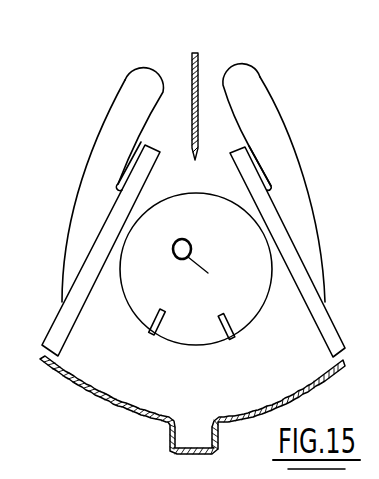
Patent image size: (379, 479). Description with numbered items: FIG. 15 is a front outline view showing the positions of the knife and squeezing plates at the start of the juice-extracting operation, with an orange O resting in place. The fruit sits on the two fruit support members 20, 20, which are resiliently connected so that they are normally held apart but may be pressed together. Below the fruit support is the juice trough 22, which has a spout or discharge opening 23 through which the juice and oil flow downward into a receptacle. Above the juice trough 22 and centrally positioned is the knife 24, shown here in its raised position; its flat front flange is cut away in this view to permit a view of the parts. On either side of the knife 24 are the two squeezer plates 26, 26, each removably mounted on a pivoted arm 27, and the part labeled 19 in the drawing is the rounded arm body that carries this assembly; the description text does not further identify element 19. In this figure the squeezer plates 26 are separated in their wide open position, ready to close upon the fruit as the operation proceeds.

The pivoted clamping arm 19 is at (253, 92).
The fruit support member 20 is at (154, 340).
The juice trough 22 is at (127, 413).
The spout or discharge opening 23 is at (172, 450).
The knife 24 is at (200, 62).
The squeezer plate 26 is at (82, 277).
The arm 27 is at (108, 163).